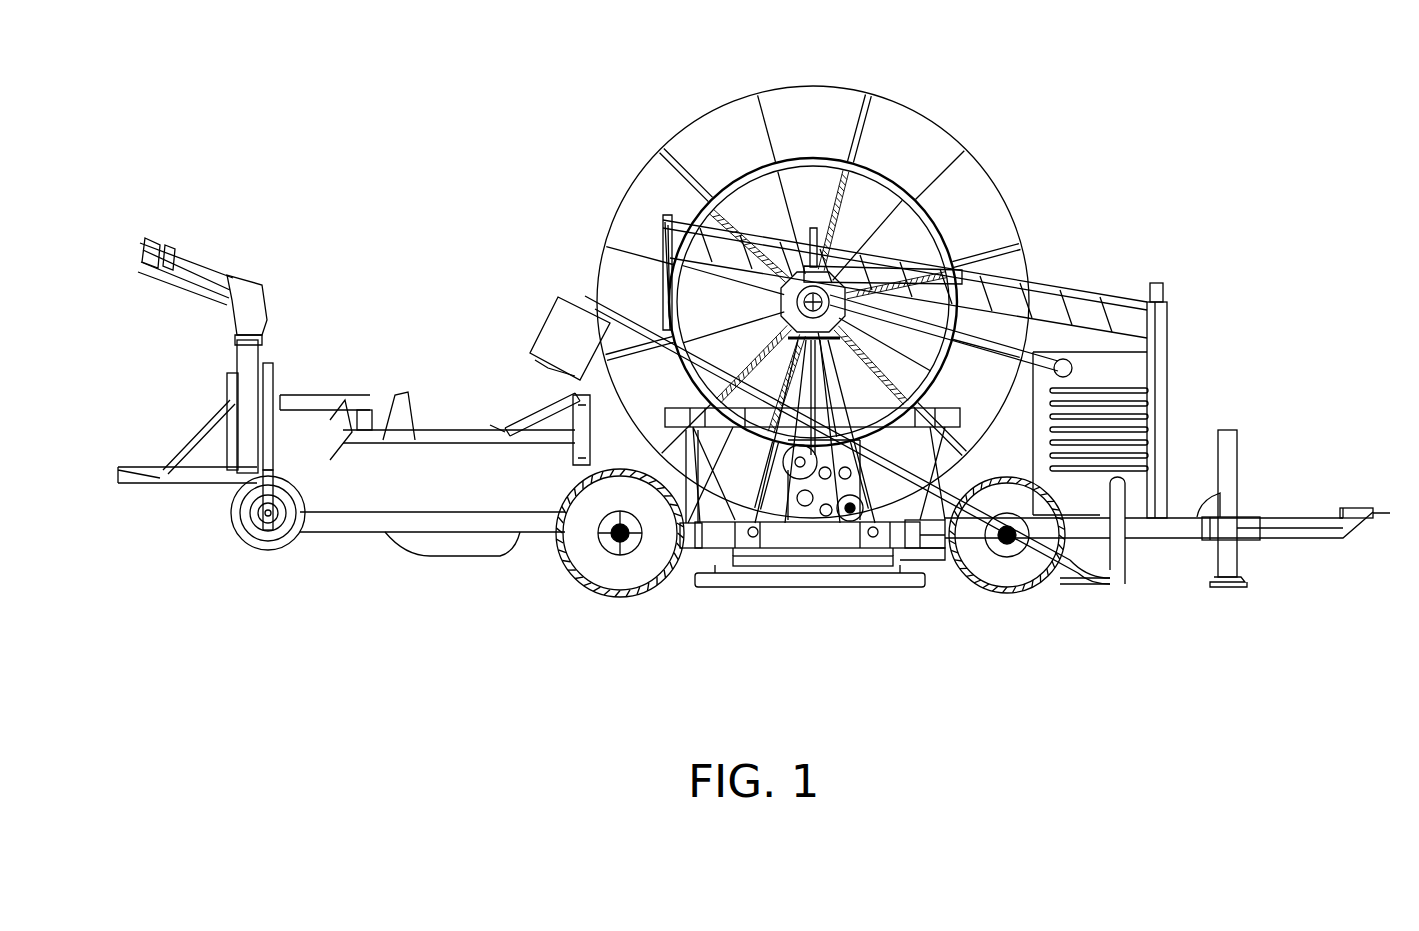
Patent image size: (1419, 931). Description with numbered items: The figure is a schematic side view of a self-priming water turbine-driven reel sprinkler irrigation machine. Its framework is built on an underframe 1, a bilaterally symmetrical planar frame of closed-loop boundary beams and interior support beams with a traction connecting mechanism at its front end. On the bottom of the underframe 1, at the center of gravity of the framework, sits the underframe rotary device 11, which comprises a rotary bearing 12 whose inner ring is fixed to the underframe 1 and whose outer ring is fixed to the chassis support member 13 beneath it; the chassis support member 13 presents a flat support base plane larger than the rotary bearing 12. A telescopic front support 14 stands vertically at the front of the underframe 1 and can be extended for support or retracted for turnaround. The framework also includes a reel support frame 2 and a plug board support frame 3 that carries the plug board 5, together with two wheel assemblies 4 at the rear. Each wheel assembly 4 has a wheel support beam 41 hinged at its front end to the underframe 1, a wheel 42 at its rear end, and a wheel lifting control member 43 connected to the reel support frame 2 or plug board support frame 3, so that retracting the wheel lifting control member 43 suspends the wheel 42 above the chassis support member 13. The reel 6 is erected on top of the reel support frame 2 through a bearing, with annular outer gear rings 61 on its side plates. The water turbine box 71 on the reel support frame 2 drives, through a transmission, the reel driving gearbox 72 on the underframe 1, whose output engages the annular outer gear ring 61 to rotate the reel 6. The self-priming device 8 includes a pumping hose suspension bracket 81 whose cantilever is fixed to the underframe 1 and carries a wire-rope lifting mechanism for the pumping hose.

The underframe 1 is at (1147, 540).
The underframe rotary device 11 is at (907, 587).
The rotary bearing 12 is at (867, 573).
The chassis support member 13 is at (757, 577).
The telescopic front support 14 is at (1228, 483).
The reel support frame 2 is at (660, 307).
The plug board support frame 3 is at (560, 404).
The wheel assembly 4 is at (580, 560).
The wheel support beam 41 is at (732, 537).
The wheel 42 is at (615, 568).
The wheel lifting control member 43 is at (690, 555).
The plug board 5 is at (430, 420).
The reel 6 is at (737, 299).
The annular outer gear ring 61 is at (720, 180).
The water turbine box 71 is at (840, 292).
The reel driving gearbox 72 is at (905, 330).
The self-priming device 8 is at (1130, 425).
The pumping hose suspension bracket 81 is at (1160, 352).